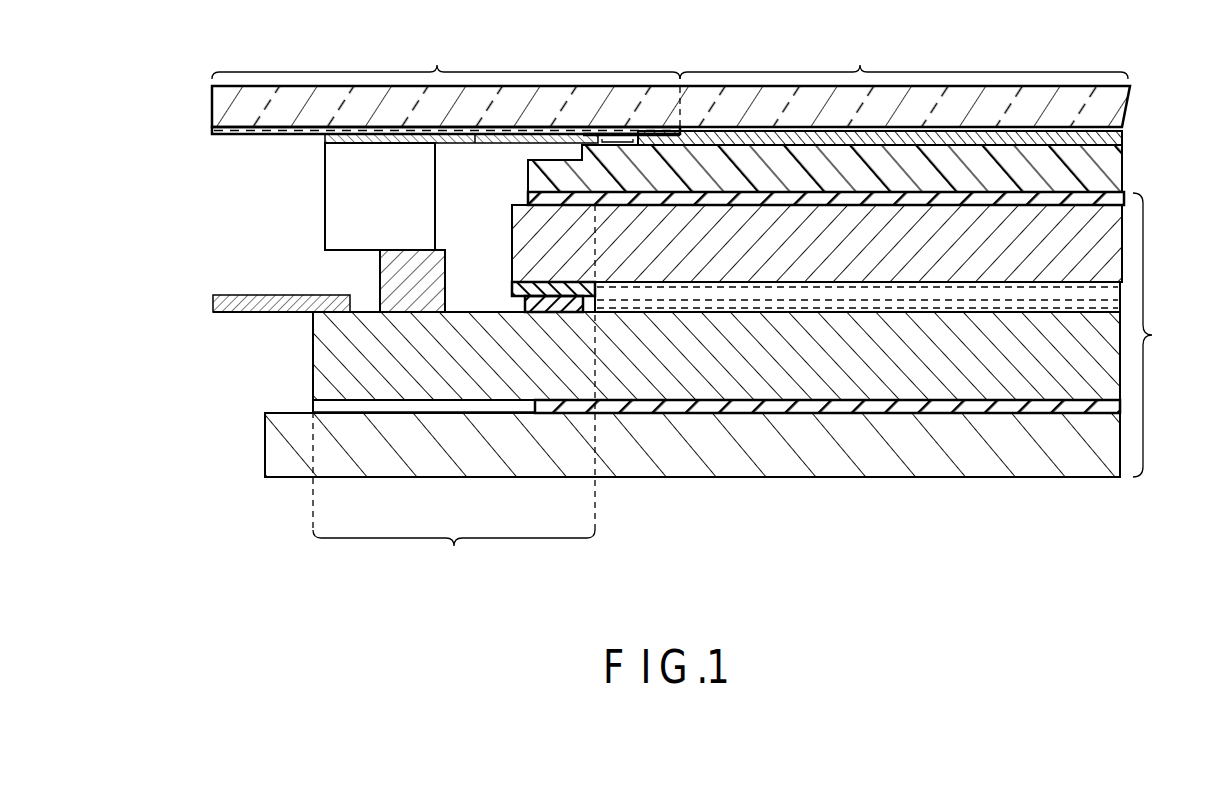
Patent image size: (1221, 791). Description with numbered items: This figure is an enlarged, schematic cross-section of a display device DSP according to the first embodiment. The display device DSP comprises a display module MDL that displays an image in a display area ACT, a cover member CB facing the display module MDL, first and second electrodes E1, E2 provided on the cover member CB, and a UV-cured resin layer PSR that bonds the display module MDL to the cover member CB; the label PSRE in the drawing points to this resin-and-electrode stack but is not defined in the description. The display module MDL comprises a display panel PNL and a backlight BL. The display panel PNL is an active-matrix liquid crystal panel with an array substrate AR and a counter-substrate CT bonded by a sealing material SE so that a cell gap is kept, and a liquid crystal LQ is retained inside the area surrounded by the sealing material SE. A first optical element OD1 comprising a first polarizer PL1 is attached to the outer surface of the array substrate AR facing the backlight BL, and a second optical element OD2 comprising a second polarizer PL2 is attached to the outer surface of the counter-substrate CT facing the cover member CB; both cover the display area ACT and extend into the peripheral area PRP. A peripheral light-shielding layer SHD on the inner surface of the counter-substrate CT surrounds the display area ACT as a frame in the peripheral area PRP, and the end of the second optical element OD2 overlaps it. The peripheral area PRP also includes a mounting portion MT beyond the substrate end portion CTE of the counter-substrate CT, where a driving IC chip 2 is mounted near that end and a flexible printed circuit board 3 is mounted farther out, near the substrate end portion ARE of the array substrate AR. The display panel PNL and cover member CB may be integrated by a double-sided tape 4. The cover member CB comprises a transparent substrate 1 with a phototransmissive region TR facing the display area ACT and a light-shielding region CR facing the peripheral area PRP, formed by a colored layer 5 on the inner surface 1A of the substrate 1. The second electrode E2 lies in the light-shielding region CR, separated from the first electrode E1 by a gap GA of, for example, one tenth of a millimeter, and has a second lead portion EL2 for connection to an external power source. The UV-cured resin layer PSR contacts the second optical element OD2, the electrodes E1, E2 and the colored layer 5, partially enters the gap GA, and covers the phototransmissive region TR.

The cover member CB is at (655, 95).
The transparent substrate 1 is at (1120, 112).
The inner surface 1A is at (1122, 143).
The colored layer 5 is at (212, 130).
The second electrode E2 is at (585, 133).
The first electrode E1 is at (1015, 140).
The second lead portion EL2 is at (350, 133).
The light-shielding region CR is at (446, 56).
The phototransmissive region TR is at (904, 55).
The pressure sensor PSRE is at (843, 120).
The display area ACT is at (866, 180).
The gap GA is at (626, 183).
The UV-cured resin layer PSR is at (1118, 168).
The mounting portion MT is at (335, 227).
The double-sided tape 4 is at (330, 218).
The driving IC chip 2 is at (382, 270).
The flexible printed circuit board 3 is at (244, 295).
The display module MDL is at (689, 394).
The display device DSP is at (649, 394).
The display panel PNL is at (666, 359).
The counter-substrate CT is at (722, 268).
The substrate end portion CTE is at (508, 238).
The peripheral light-shielding layer SHD is at (538, 300).
The sealing material SE is at (555, 310).
The liquid crystal LQ is at (675, 298).
The substrate end portion ARE is at (304, 350).
The array substrate AR is at (630, 385).
The first optical element OD1 is at (827, 463).
The first polarizer PL1 is at (860, 407).
The second optical element OD2 is at (826, 359).
The second polarizer PL2 is at (985, 206).
The backlight BL is at (1078, 465).
The peripheral area PRP is at (454, 394).